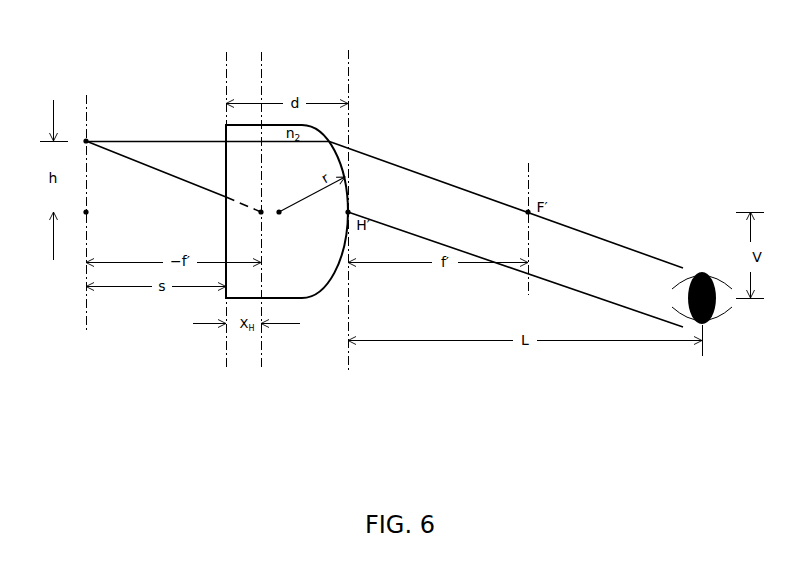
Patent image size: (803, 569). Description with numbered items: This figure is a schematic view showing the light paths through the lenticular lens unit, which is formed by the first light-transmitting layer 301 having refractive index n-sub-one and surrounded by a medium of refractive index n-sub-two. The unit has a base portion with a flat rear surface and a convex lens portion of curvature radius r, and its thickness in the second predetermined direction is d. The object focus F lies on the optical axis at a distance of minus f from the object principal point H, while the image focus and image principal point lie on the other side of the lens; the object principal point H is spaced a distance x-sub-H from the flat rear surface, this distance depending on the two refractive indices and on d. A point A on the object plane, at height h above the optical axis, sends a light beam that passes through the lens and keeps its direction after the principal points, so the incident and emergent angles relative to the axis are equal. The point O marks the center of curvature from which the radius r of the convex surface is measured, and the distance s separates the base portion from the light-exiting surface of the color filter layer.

The first light-transmitting layer 301 is at (305, 292).
The object point A is at (81, 132).
The object focus F is at (83, 219).
The object principal point H is at (268, 217).
The center of curvature O is at (286, 217).